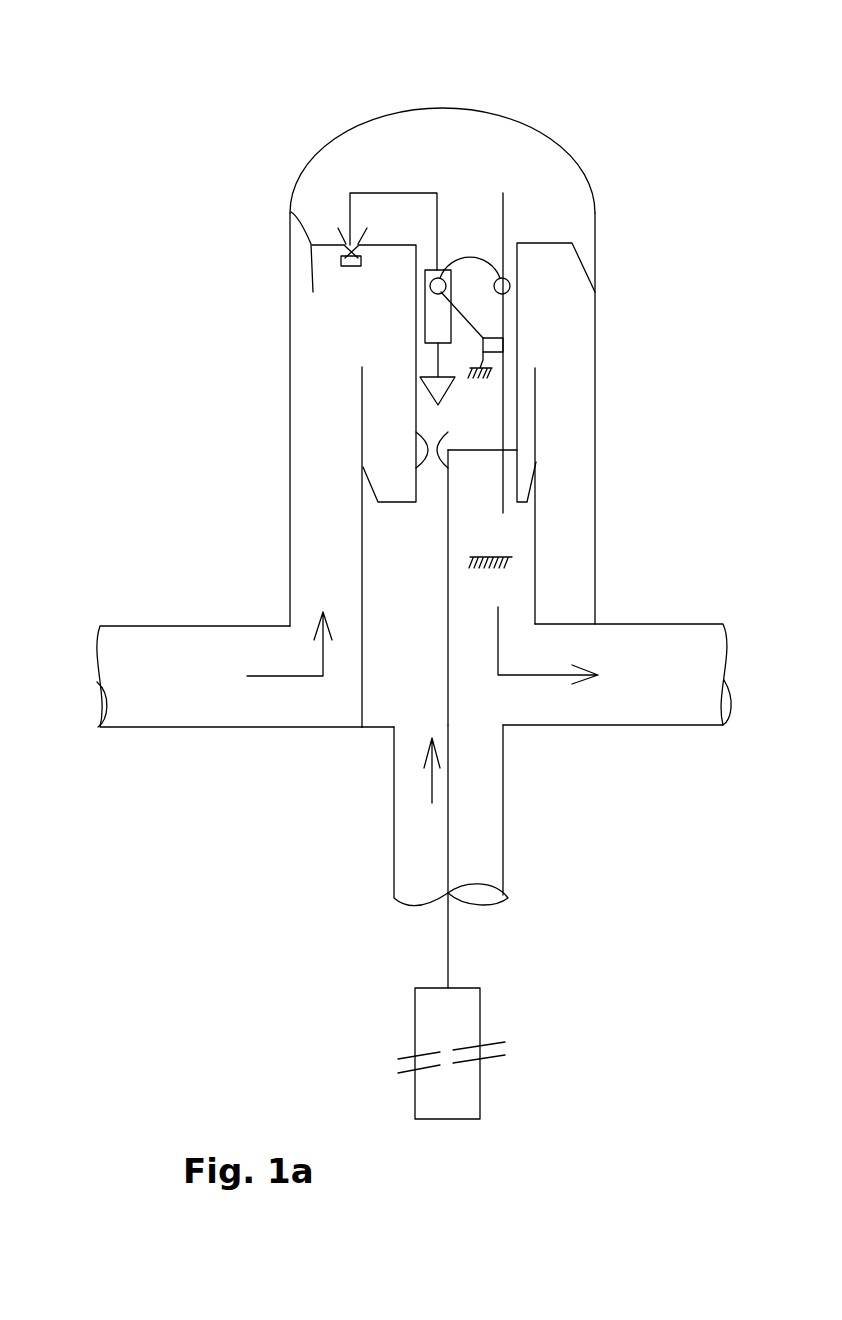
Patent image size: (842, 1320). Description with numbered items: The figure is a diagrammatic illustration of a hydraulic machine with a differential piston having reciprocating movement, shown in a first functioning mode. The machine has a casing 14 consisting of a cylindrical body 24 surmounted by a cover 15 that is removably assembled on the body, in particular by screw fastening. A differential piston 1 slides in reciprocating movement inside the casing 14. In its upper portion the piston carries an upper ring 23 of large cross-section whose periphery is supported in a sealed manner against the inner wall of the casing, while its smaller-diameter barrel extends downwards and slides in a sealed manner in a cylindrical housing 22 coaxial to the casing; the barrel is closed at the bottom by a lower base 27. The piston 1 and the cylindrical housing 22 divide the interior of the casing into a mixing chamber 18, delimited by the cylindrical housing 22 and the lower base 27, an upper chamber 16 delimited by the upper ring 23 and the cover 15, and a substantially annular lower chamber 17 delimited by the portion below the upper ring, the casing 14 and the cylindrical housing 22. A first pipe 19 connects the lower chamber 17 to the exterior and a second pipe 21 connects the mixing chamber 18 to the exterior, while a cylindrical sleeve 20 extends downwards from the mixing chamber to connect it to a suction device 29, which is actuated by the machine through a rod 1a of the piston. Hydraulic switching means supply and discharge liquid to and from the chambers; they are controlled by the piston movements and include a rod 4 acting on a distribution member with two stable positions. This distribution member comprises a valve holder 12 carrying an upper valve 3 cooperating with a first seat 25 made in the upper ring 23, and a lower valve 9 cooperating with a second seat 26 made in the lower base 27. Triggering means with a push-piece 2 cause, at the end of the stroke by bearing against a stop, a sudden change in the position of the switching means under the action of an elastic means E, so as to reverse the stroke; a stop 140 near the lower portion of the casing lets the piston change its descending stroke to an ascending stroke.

The differential piston 1 is at (311, 244).
The rod of the piston 1a is at (448, 692).
The push-piece 2 is at (504, 218).
The upper valve 3 is at (356, 262).
The rod 4 is at (468, 328).
The lower valve 9 is at (437, 386).
The valve holder 12 is at (368, 188).
The casing 14 is at (629, 198).
The cover 15 is at (550, 138).
The upper chamber 16 is at (403, 146).
The lower chamber 17 is at (328, 478).
The mixing chamber 18 is at (470, 622).
The first pipe 19 is at (149, 672).
The cylindrical sleeve 20 is at (423, 807).
The second pipe 21 is at (640, 682).
The cylindrical housing 22 is at (537, 513).
The upper ring 23 is at (549, 242).
The cylindrical body 24 is at (597, 335).
The first seat 25 is at (384, 262).
The second seat 26 is at (445, 440).
The lower base 27 is at (473, 452).
The suction device 29 is at (450, 1018).
The stop 140 is at (497, 556).
The elastic means E is at (478, 240).